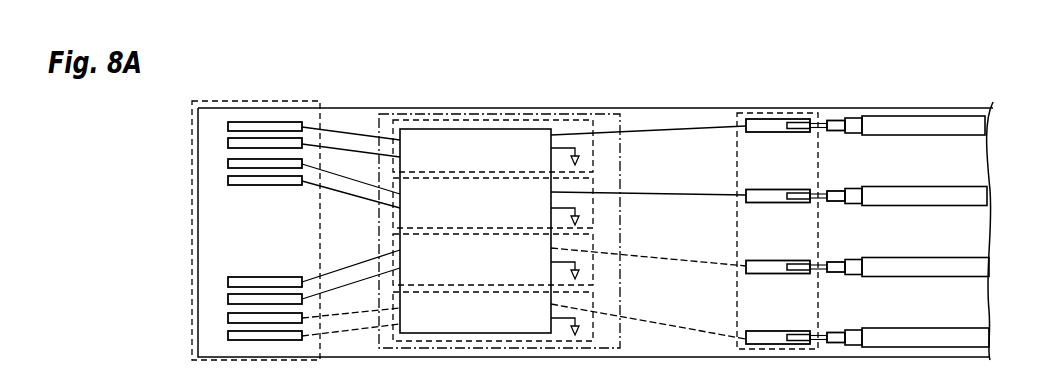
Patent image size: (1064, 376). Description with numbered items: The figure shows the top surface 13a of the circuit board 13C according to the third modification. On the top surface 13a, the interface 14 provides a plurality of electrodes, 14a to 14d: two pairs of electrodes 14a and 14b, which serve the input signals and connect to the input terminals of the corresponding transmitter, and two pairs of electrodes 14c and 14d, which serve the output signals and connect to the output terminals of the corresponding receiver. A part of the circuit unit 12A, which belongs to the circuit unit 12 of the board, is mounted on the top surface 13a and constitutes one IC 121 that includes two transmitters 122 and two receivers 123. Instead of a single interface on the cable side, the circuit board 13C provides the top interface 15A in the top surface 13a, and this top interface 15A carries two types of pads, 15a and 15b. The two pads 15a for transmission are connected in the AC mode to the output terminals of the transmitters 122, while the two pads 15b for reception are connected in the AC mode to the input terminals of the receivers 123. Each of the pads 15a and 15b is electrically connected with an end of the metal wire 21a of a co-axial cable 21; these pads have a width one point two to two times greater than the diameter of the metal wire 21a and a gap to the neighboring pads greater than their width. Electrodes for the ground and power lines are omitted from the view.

The circuit board 13C is at (707, 108).
The top surface 13a is at (655, 122).
The interface 14 is at (270, 101).
The electrode 14a is at (287, 126).
The electrode 14b is at (242, 143).
The electrode 14c is at (282, 282).
The electrode 14d is at (243, 300).
The circuit unit 12A is at (511, 205).
The circuit unit 12 is at (558, 114).
The IC 121 is at (401, 129).
The transmitter 122 is at (569, 174).
The receiver 123 is at (569, 287).
The top interface 15A is at (767, 113).
The pad 15a is at (765, 128).
The pad 15b is at (763, 270).
The co-axial cable 21 is at (935, 127).
The metal wire 21a is at (800, 127).